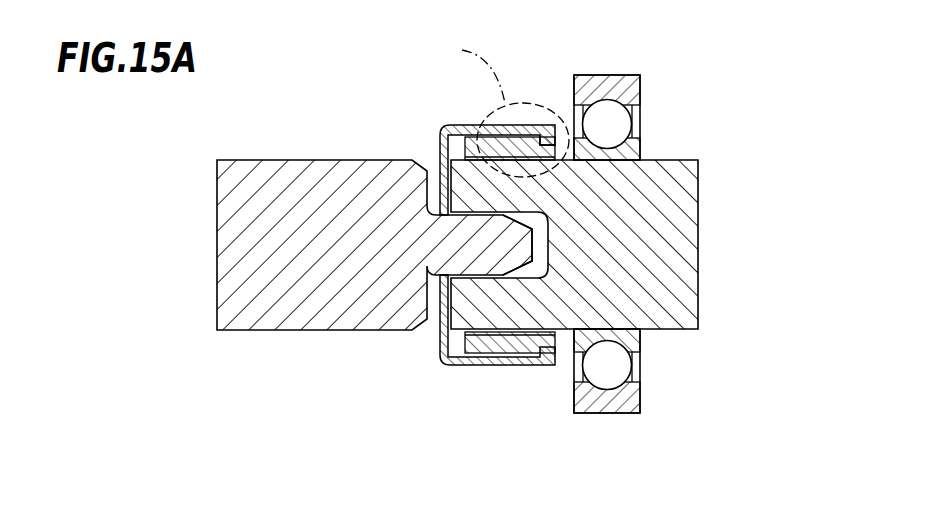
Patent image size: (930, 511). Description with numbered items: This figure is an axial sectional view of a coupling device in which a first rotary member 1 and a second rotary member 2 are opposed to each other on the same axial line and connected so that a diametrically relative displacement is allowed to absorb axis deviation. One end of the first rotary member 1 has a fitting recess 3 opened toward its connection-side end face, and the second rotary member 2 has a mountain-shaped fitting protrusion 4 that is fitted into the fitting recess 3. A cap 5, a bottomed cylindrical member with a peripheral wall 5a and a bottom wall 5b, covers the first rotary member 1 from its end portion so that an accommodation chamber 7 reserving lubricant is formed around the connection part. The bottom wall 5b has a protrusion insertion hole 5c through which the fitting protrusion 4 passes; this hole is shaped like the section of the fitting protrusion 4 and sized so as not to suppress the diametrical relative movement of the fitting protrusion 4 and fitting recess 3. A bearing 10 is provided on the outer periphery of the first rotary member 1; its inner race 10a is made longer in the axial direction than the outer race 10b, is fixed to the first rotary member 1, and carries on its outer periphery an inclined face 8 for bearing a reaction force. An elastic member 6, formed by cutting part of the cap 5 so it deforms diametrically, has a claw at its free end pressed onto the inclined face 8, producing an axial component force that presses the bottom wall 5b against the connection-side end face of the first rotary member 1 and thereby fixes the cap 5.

The first rotary member 1 is at (478, 258).
The second rotary member 2 is at (374, 213).
The fitting recess 3 is at (543, 246).
The fitting protrusion 4 is at (490, 245).
The cap 5 is at (459, 248).
The peripheral wall 5a is at (528, 367).
The bottom wall 5b is at (438, 150).
The protrusion insertion hole 5c is at (441, 277).
The elastic member 6 is at (525, 130).
The accommodation chamber 7 is at (526, 272).
The inclined face 8 is at (538, 132).
The bearing 10 is at (639, 277).
The inner race 10a is at (633, 150).
The outer race 10b is at (607, 415).